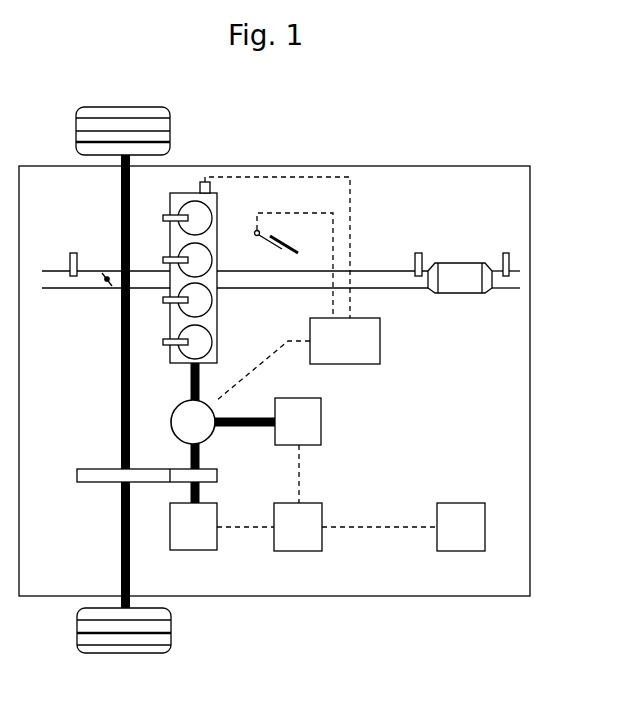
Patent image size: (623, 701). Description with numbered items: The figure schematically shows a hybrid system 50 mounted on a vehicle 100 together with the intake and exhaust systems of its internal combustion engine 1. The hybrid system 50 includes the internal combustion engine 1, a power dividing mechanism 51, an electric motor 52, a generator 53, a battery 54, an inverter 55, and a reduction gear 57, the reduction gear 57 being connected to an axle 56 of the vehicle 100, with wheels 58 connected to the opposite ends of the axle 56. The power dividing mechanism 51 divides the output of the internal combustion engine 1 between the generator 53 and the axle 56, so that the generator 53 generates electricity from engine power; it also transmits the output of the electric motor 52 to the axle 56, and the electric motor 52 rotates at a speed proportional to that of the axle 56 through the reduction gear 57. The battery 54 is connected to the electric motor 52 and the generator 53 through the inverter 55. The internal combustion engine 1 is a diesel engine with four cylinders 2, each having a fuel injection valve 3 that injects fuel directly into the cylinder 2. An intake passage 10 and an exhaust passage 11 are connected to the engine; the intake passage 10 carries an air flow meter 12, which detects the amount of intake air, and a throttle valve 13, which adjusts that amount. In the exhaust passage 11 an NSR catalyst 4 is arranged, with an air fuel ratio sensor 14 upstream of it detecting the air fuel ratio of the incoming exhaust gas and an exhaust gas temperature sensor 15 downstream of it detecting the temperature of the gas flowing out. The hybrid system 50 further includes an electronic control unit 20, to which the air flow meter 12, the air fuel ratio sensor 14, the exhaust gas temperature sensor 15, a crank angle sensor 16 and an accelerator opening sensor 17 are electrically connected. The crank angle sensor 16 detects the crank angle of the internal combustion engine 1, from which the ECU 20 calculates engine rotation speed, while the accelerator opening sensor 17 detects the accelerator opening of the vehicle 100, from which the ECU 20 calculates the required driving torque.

The vehicle 100 is at (370, 166).
The internal combustion engine 1 is at (235, 305).
The cylinders 2 is at (172, 240).
The fuel injection valve 3 is at (168, 216).
The NSR catalyst 4 is at (462, 265).
The intake passage 10 is at (53, 270).
The exhaust passage 11 is at (365, 270).
The air flow meter 12 is at (80, 254).
The throttle valve 13 is at (103, 288).
The air fuel ratio sensor 14 is at (422, 255).
The exhaust gas temperature sensor 15 is at (509, 255).
The crank angle sensor 16 is at (212, 188).
The accelerator opening sensor 17 is at (256, 236).
The electronic control unit (ECU) 20 is at (381, 320).
The hybrid system 50 is at (398, 410).
The power dividing mechanism 51 is at (216, 437).
The electric motor 52 is at (218, 512).
The generator 53 is at (322, 420).
The battery 54 is at (478, 503).
The inverter 55 is at (323, 512).
The axle 56 is at (120, 533).
The reduction gear 57 is at (96, 468).
The wheels 58 is at (125, 106).